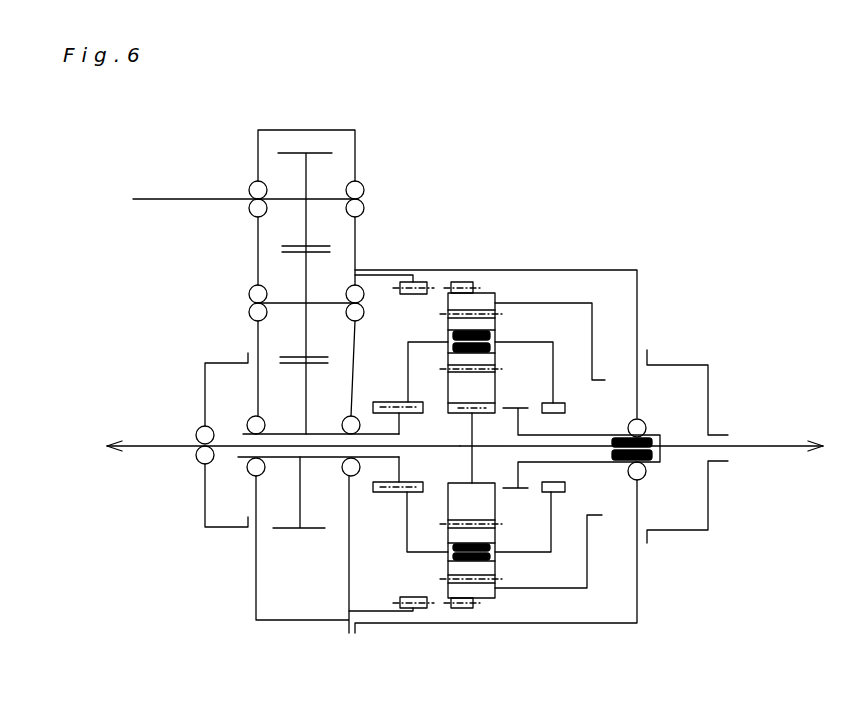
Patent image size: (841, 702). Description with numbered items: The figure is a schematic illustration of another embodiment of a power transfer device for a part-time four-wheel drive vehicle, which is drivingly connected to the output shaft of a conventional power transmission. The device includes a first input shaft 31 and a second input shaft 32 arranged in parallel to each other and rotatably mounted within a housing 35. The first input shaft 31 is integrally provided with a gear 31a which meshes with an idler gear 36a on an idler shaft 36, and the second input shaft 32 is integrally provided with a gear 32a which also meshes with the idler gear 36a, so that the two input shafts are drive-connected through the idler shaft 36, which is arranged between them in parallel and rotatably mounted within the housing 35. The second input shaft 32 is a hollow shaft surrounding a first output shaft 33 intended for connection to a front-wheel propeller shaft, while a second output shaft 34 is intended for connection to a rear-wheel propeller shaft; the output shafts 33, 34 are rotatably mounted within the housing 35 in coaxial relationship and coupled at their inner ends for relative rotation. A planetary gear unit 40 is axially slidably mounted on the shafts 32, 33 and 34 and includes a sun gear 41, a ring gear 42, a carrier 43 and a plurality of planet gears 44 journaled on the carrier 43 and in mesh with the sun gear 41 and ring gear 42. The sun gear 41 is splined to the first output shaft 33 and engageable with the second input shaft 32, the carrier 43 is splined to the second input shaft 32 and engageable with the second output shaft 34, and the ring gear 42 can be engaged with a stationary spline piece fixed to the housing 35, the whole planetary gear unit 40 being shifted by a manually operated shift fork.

The first input shaft 31 is at (180, 201).
The gear 31a is at (314, 151).
The second input shaft 32 is at (330, 460).
The gear 32a is at (287, 530).
The first output shaft 33 is at (155, 448).
The second output shaft 34 is at (775, 452).
The housing 35 is at (553, 268).
The idler shaft 36 is at (290, 305).
The idler gear 36a is at (320, 255).
The planetary gear unit 40 is at (493, 290).
The sun gear 41 is at (488, 510).
The ring gear 42 is at (480, 596).
The carrier 43 is at (404, 549).
The planet gears 44 is at (490, 535).